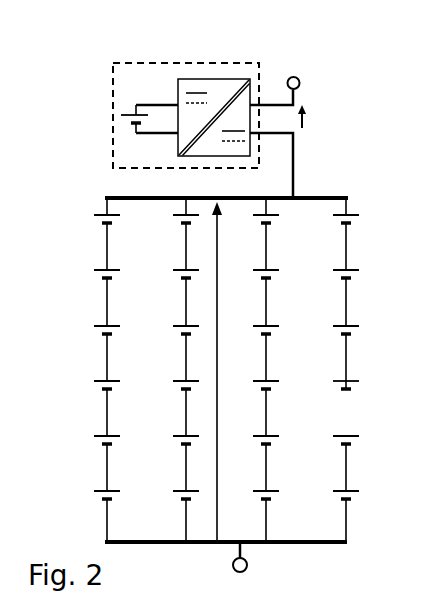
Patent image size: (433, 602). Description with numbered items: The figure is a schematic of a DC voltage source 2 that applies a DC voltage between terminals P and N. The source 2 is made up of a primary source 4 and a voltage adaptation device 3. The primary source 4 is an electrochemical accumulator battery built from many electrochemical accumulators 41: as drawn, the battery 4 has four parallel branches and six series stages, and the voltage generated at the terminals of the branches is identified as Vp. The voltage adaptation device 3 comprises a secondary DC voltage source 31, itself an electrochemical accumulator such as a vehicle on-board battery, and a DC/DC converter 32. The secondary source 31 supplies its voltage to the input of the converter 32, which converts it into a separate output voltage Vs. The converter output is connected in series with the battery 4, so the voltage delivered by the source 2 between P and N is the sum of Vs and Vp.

The DC voltage source 2 is at (343, 134).
The voltage adaptation device 3 is at (117, 115).
The secondary DC voltage source 31 is at (122, 114).
The DC/DC converter 32 is at (213, 78).
The primary source 4 is at (374, 253).
The electrochemical accumulator 41 is at (359, 382).